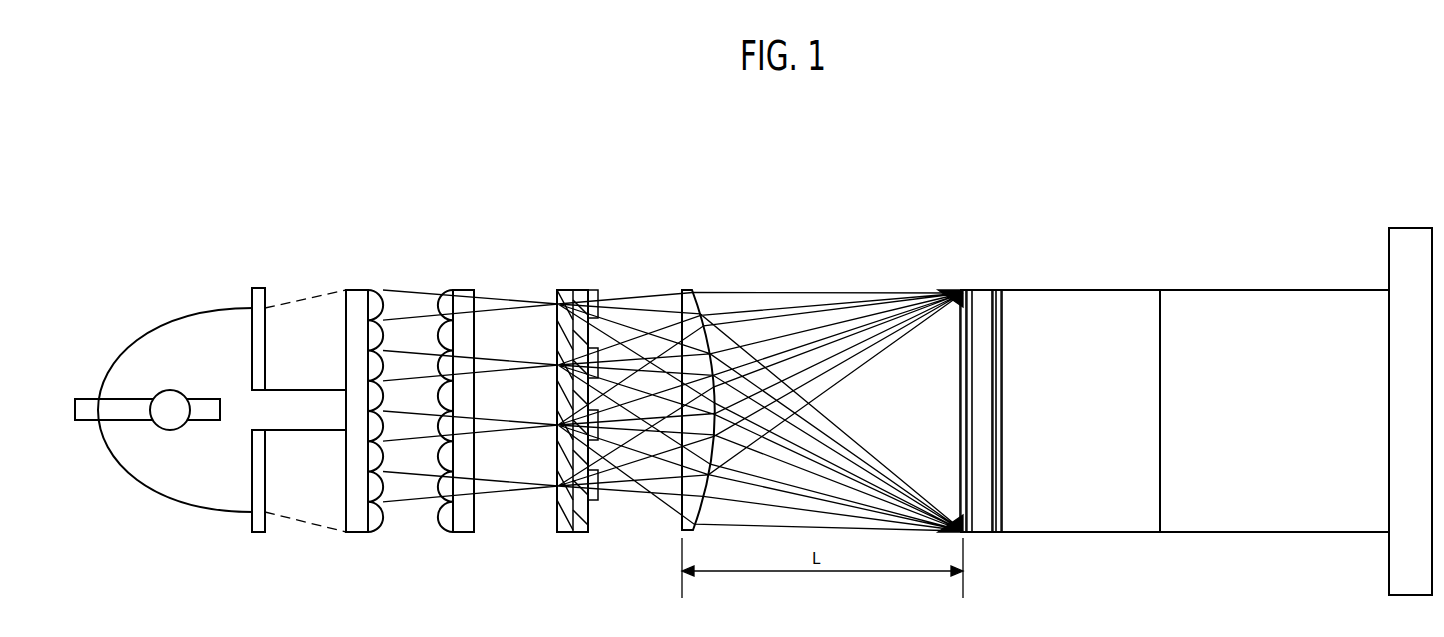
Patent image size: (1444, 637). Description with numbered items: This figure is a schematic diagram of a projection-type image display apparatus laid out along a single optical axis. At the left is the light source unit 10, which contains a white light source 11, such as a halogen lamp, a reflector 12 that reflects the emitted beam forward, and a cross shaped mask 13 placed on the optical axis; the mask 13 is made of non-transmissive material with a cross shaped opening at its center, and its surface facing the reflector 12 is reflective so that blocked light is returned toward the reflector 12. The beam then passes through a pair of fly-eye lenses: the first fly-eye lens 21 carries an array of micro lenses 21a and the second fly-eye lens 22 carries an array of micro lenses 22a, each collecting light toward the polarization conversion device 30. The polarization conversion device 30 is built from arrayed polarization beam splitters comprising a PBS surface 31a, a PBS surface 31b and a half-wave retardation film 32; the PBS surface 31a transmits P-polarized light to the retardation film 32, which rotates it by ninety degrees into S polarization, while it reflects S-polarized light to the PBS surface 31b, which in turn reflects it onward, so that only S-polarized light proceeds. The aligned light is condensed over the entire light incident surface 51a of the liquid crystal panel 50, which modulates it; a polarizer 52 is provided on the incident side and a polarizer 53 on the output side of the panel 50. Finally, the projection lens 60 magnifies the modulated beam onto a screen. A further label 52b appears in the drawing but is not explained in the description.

The light source unit 10 is at (226, 275).
The light source 11 is at (172, 400).
The reflector 12 is at (150, 333).
The cross shaped mask 13 is at (258, 290).
The fly-eye lens 21 is at (355, 290).
The micro lenses 21a is at (378, 292).
The fly-eye lens 22 is at (466, 292).
The micro lenses 22a is at (440, 292).
The polarization conversion device 30 is at (583, 290).
The PBS surface 31a is at (565, 292).
The PBS surface 31b is at (558, 345).
The ½λ retardation film 32 is at (600, 293).
The liquid crystal panel 50 is at (986, 258).
The light incident surface 51a is at (960, 368).
The polarizer 52 is at (963, 424).
The light exit side substrate 52b is at (1000, 358).
The polarizer 53 is at (1003, 408).
The projection lens 60 is at (690, 292).